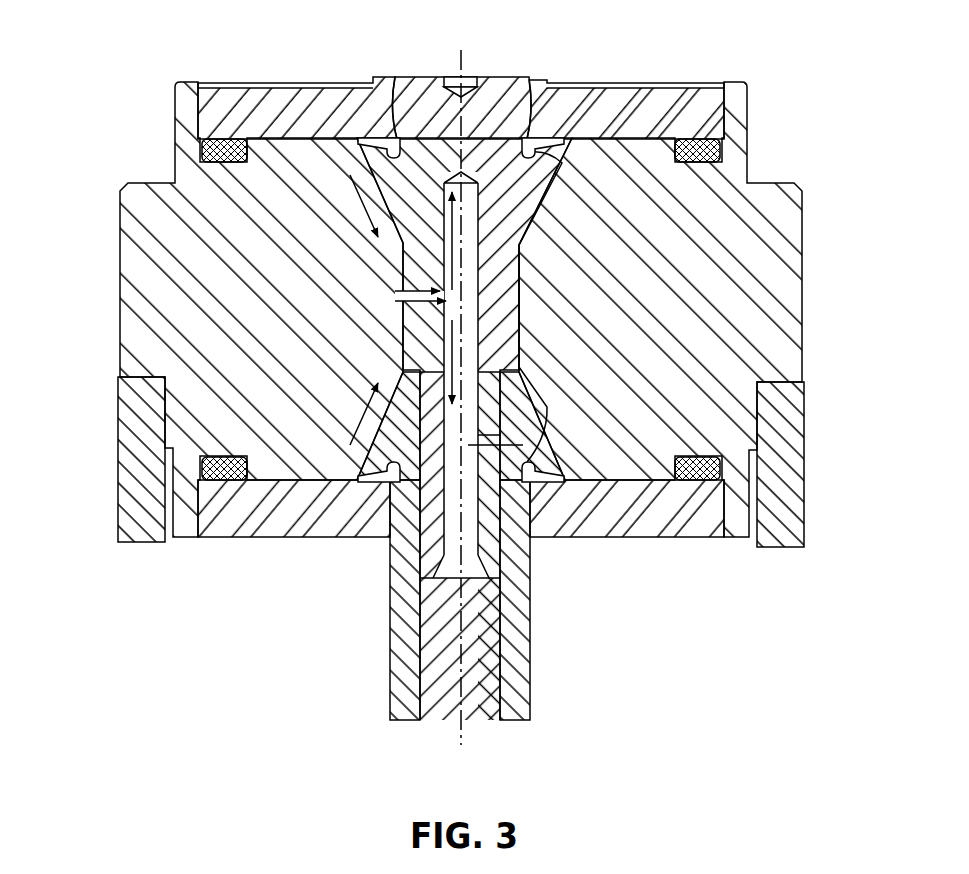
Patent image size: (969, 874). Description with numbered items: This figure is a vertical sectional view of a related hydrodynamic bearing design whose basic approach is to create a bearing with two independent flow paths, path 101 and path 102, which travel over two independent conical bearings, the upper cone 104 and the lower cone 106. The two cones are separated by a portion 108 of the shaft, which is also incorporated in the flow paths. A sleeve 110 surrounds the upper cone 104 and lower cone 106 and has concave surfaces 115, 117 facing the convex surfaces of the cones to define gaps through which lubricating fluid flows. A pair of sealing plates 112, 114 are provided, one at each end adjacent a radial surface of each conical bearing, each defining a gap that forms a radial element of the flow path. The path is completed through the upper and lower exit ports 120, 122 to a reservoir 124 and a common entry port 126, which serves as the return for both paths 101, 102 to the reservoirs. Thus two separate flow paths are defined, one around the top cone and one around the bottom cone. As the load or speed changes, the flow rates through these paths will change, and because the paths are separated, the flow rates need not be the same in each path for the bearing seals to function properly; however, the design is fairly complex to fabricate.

The path 101 is at (357, 207).
The path 102 is at (350, 440).
The upper cone 104 is at (530, 213).
The lower cone 106 is at (533, 397).
The portion of the shaft 108 is at (523, 300).
The sleeve 110 is at (750, 250).
The sealing plate 112 is at (643, 107).
The sealing plate 114 is at (687, 498).
The concave surface 115 is at (602, 118).
The concave surface 117 is at (563, 455).
The upper exit port 120 is at (495, 118).
The lower exit port 122 is at (535, 420).
The reservoir 124 is at (453, 523).
The common entry port 126 is at (395, 293).